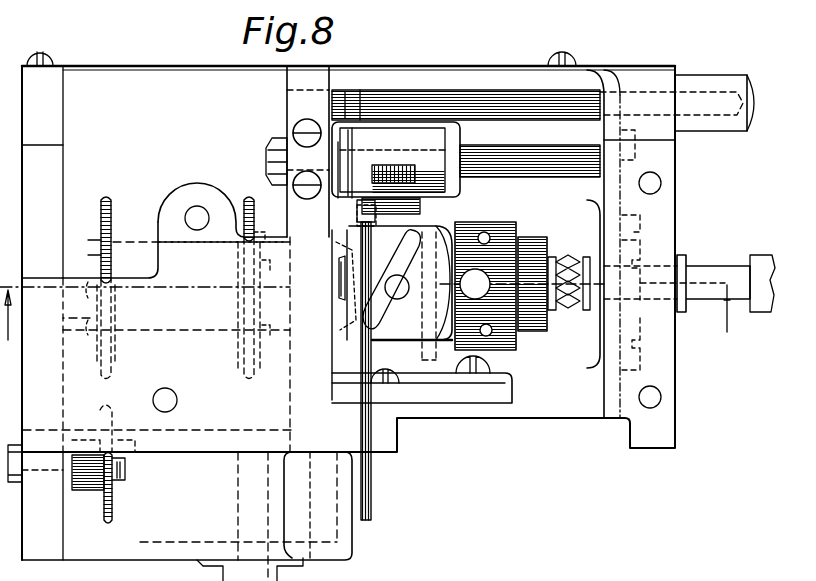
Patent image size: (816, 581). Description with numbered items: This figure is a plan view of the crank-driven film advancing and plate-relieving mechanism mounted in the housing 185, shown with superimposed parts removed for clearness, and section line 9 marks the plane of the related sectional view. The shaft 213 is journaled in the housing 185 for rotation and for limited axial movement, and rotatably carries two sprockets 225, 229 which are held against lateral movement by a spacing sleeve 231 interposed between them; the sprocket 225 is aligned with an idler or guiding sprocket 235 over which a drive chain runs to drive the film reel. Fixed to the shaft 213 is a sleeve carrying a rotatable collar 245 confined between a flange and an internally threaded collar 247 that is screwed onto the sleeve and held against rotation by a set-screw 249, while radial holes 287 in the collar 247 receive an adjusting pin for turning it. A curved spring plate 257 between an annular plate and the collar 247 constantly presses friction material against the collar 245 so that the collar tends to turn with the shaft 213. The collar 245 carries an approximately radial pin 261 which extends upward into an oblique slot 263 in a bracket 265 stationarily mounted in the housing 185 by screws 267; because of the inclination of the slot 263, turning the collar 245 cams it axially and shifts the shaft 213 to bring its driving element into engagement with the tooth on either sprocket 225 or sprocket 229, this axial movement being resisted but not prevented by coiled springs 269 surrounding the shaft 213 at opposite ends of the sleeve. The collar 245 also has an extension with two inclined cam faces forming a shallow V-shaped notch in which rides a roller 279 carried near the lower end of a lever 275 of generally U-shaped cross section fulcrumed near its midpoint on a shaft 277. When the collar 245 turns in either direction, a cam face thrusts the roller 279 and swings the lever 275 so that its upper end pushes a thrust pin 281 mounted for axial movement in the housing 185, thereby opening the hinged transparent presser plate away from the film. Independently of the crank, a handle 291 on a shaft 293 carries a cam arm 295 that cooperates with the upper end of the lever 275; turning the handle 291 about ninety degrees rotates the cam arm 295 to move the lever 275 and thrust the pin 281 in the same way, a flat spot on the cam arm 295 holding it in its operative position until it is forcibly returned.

The section line 9- 9 is at (370, 307).
The housing 185 is at (508, 414).
The shaft 213 is at (711, 268).
The sprocket 225 is at (117, 180).
The sprocket 229 is at (246, 197).
The spacing sleeve 231 is at (135, 250).
The idler or guiding sprocket 235 is at (115, 502).
The collar 245 is at (427, 380).
The collar 247 is at (518, 345).
The set-screw 249 is at (479, 281).
The curved spring plate 257 is at (438, 222).
The radial pin 261 is at (409, 296).
The oblique slot 263 is at (405, 258).
The bracket 265 is at (358, 226).
The screws 267 is at (494, 370).
The coiled springs 269 is at (340, 268).
The lever 275 is at (425, 126).
The shaft 277 is at (565, 139).
The roller 279 is at (445, 183).
The thrust pin 281 is at (374, 470).
The radial holes 287 is at (490, 234).
The handle 291 is at (720, 80).
The shaft 293 is at (522, 88).
The cam arm 295 is at (380, 110).